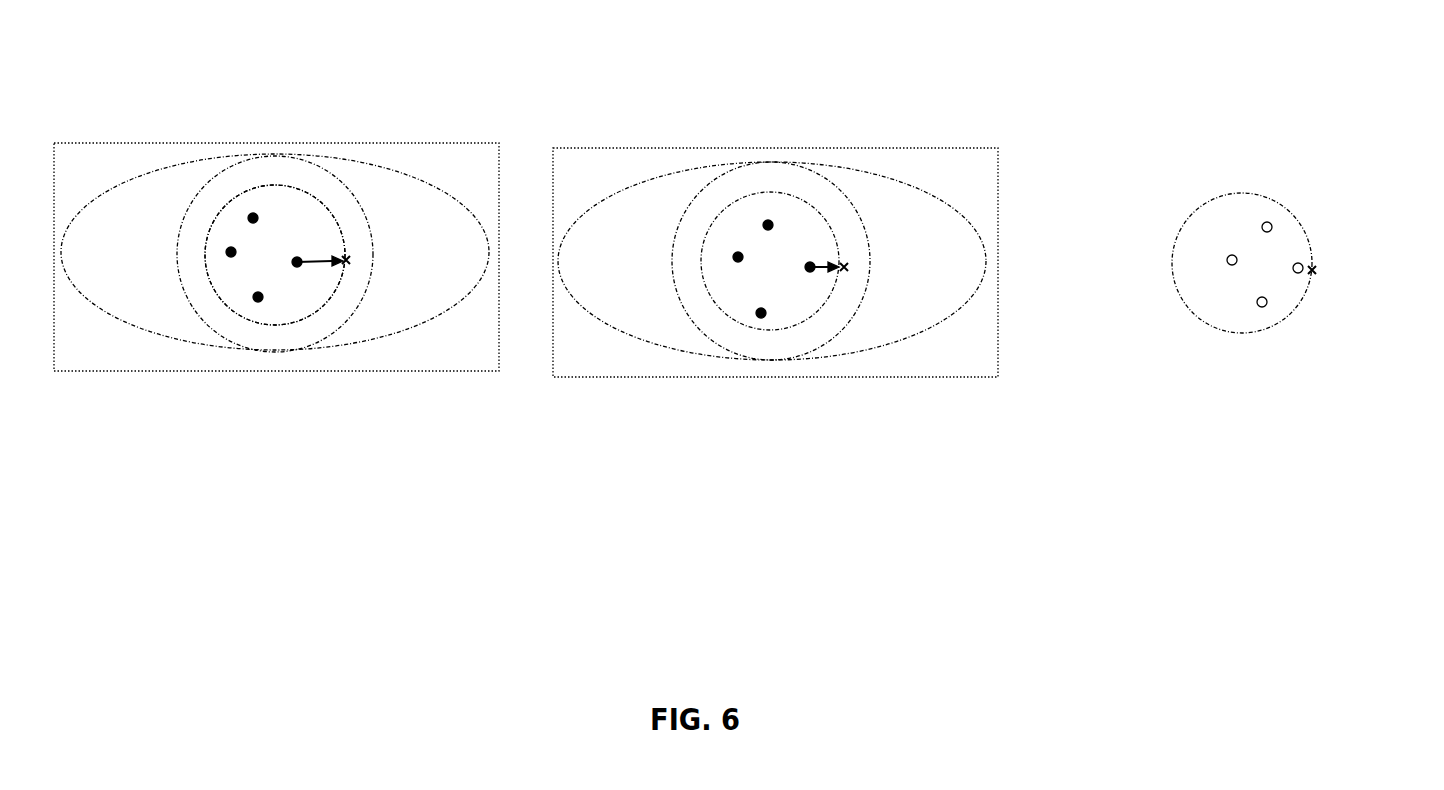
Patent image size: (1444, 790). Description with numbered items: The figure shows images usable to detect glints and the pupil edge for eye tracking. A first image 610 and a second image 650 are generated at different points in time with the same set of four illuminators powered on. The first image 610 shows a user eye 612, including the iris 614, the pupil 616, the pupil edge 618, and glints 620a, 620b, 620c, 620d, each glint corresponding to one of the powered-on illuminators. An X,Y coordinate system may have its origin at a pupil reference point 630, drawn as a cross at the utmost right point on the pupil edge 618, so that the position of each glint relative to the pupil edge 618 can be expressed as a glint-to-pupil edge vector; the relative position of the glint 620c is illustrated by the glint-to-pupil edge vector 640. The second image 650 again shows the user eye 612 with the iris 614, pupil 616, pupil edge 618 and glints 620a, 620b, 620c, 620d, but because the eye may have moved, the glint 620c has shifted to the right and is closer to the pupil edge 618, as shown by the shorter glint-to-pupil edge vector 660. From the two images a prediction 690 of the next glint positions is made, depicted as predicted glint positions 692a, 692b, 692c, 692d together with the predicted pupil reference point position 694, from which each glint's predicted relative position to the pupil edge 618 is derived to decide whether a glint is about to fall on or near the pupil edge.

The first image 610 is at (277, 143).
The user eye 612 is at (137, 331).
The iris 614 is at (219, 318).
The pupil 616 is at (322, 290).
The pupil edge 618 is at (275, 323).
The glint 620a is at (253, 218).
The glint 620b is at (231, 252).
The glint 620c is at (297, 262).
The glint 620d is at (258, 297).
The pupil reference point 630 is at (352, 258).
The glint-to-pupil edge vector 640 is at (323, 257).
The second image 650 is at (775, 148).
The glint-to-pupil edge vector 660 is at (823, 262).
The prediction 690 is at (1243, 192).
The predicted glint position 692a is at (1272, 226).
The predicted glint position 692b is at (1229, 257).
The predicted glint position 692c is at (1298, 275).
The predicted glint position 692d is at (1258, 304).
The predicted pupil reference point position 694 is at (1317, 263).